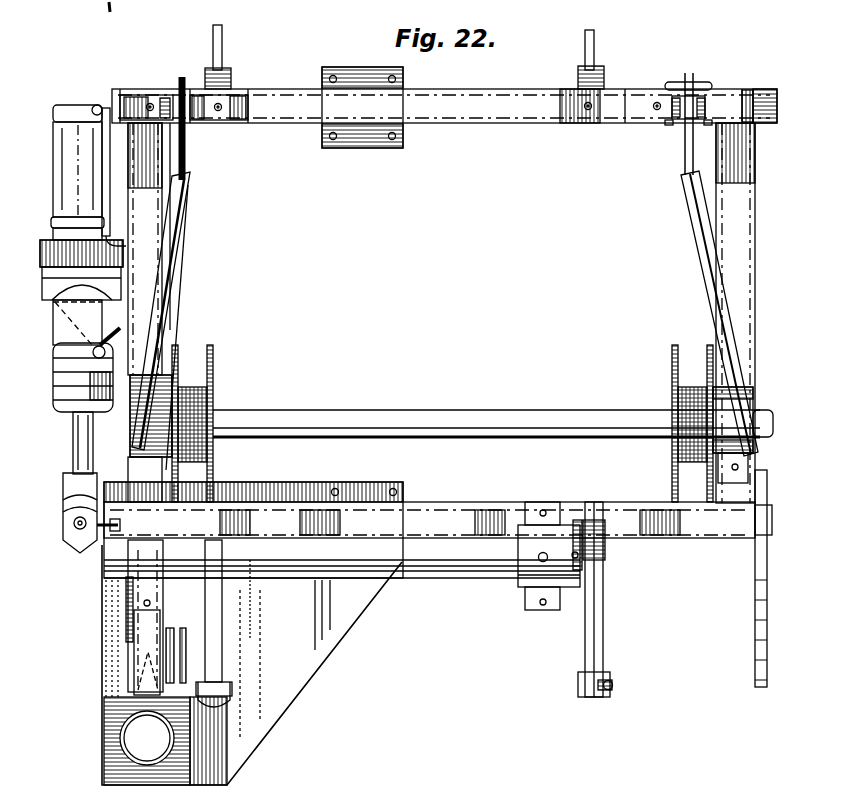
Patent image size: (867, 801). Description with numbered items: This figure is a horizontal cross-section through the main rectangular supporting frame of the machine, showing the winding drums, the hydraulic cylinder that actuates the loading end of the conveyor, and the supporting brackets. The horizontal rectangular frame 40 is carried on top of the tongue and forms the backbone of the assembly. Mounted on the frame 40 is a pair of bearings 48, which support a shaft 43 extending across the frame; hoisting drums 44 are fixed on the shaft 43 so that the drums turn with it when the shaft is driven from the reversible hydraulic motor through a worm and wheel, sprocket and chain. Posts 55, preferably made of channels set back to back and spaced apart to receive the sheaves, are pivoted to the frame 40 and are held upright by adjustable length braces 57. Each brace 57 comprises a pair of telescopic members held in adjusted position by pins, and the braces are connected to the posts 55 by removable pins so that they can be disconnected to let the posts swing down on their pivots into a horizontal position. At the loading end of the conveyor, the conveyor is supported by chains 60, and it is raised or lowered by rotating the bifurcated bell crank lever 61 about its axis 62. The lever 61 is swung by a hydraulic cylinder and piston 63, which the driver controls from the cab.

The horizontal rectangular frame 40 is at (758, 222).
The shaft 43 is at (424, 422).
The hoisting drum 44 is at (672, 360).
The bearing 48 is at (173, 390).
The post 55 is at (152, 96).
The adjustable length brace 57 is at (184, 216).
The chain 60 is at (614, 690).
The bifurcated bell crank lever 61 is at (596, 613).
The axis 62 is at (438, 572).
The hydraulic cylinder and piston 63 is at (70, 177).